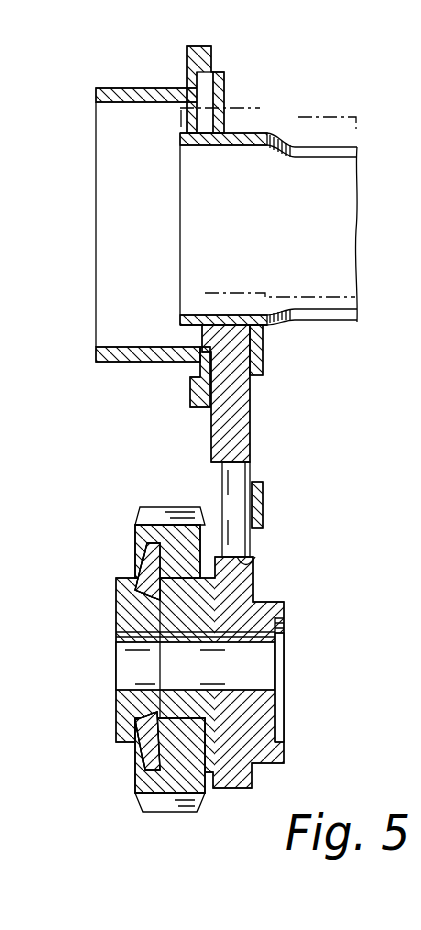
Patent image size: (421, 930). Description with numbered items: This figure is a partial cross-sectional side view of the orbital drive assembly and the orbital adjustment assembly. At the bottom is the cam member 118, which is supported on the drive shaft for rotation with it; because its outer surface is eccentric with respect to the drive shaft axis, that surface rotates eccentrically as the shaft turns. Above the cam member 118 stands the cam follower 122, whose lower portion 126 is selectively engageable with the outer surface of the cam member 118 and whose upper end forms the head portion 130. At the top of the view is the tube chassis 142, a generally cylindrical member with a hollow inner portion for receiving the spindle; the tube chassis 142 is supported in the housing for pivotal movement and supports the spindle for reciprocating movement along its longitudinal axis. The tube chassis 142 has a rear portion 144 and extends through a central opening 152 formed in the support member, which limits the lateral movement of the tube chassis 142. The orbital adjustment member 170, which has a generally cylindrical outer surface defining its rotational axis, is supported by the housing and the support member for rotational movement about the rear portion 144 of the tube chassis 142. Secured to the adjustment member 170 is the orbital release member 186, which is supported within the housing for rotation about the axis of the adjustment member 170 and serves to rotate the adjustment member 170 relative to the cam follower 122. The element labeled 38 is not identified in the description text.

The gear tooth 38 is at (165, 557).
The cam member 118 is at (238, 586).
The cam follower 122 is at (248, 470).
The lower portion 126 is at (255, 565).
The head portion 130 is at (235, 352).
The tube chassis 142 is at (330, 221).
The rear portion 144 is at (205, 318).
The central opening 152 is at (248, 112).
The orbital adjustment member 170 is at (200, 370).
The orbital release member 186 is at (137, 92).